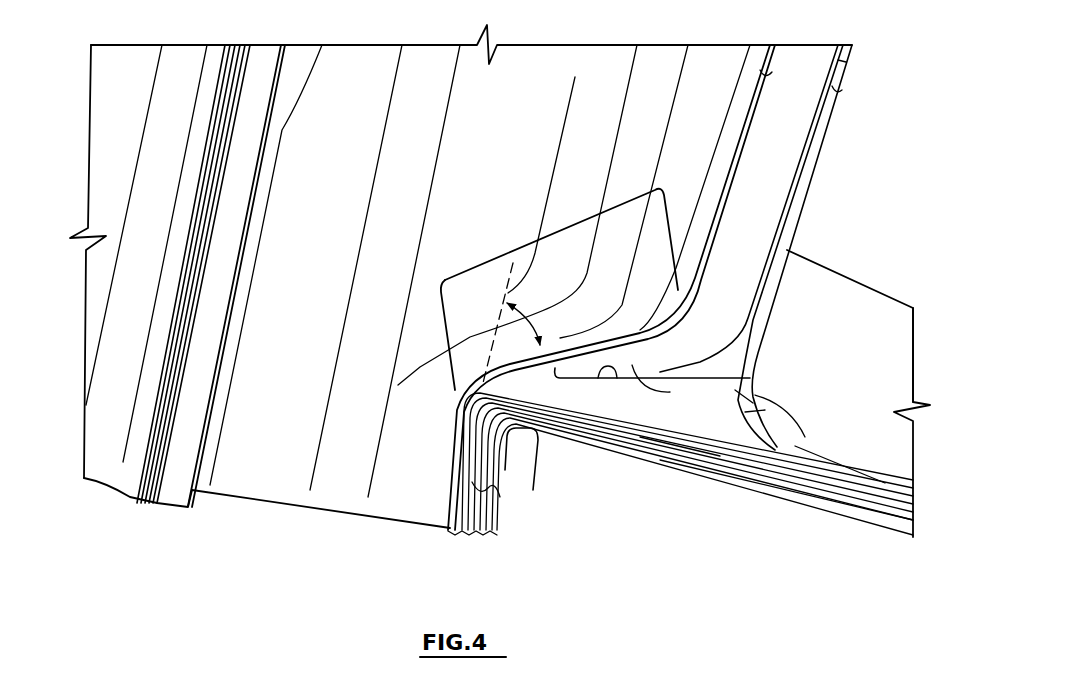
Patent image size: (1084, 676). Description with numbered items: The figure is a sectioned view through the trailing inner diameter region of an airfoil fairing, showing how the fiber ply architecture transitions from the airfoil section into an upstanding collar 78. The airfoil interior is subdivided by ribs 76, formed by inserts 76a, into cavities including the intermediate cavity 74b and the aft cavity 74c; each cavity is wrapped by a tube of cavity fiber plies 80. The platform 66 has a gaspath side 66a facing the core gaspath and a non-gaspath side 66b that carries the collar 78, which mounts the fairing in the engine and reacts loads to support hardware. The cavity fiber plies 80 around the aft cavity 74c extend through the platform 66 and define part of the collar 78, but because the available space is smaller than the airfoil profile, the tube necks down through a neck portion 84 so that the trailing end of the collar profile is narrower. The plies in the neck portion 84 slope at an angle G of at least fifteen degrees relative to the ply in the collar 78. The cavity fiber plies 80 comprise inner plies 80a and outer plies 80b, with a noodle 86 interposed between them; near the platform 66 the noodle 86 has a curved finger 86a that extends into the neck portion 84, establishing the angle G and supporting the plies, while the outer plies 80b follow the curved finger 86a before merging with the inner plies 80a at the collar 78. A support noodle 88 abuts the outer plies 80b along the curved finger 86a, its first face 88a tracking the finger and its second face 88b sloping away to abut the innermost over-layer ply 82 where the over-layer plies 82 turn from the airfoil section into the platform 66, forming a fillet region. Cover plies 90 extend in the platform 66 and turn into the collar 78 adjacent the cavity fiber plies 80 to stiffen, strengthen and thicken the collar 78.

The platform 66 is at (907, 508).
The gaspath side 66a is at (885, 360).
The non-gaspath side 66b is at (695, 476).
The intermediate cavity 74b is at (131, 325).
The aft cavity 74c is at (648, 115).
The ribs 76 is at (185, 425).
The inserts 76a is at (172, 485).
The collar 78 is at (535, 490).
The cavity fiber plies 80 is at (712, 202).
The inner plies 80a is at (758, 72).
The outer plies 80b is at (840, 58).
The over-layer plies 82 is at (835, 92).
The neck portion 84 is at (568, 224).
The noodle 86 is at (748, 257).
The curved finger 86a is at (720, 378).
The support noodle 88 is at (703, 405).
The first face 88a is at (601, 380).
The second face 88b is at (763, 412).
The cover plies 90 is at (503, 482).
The angle G is at (527, 322).